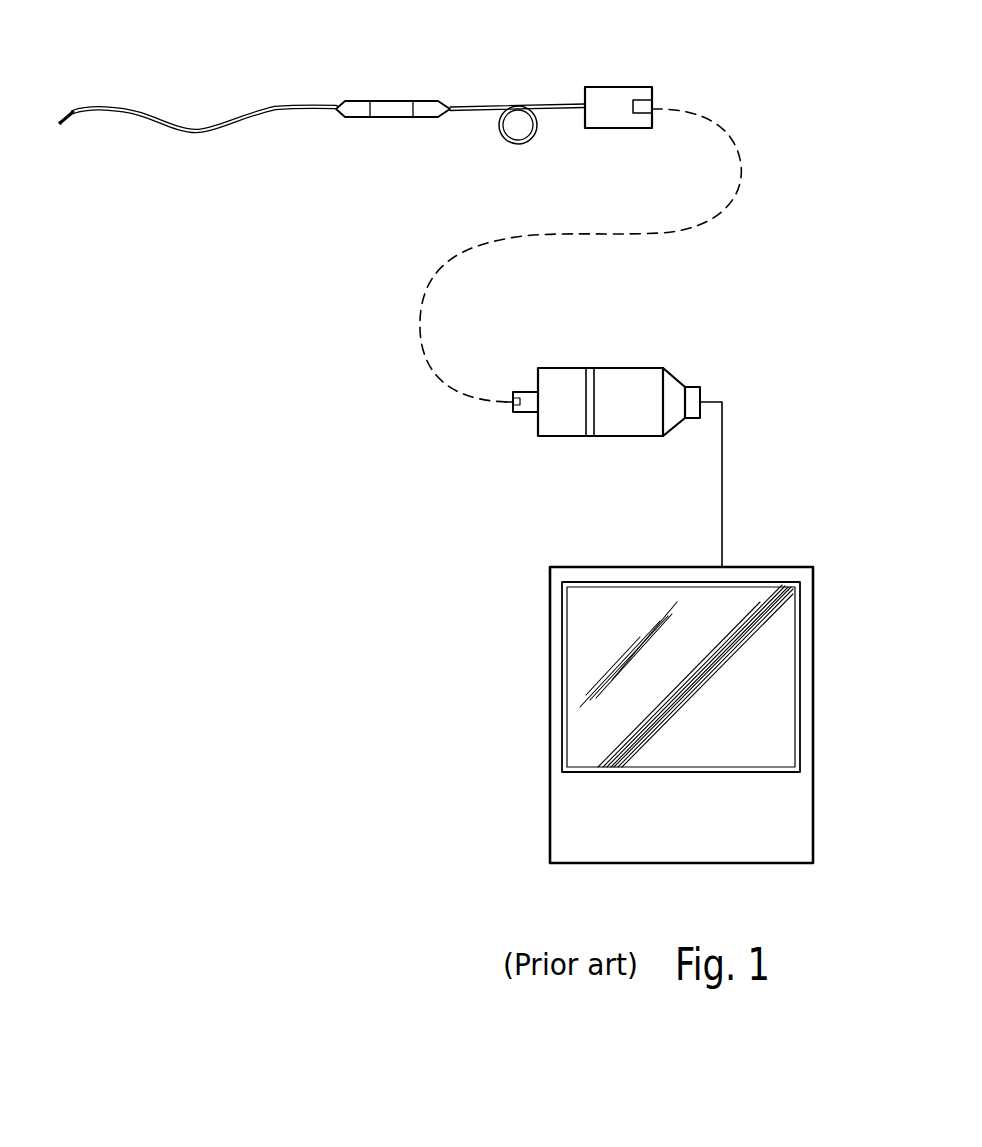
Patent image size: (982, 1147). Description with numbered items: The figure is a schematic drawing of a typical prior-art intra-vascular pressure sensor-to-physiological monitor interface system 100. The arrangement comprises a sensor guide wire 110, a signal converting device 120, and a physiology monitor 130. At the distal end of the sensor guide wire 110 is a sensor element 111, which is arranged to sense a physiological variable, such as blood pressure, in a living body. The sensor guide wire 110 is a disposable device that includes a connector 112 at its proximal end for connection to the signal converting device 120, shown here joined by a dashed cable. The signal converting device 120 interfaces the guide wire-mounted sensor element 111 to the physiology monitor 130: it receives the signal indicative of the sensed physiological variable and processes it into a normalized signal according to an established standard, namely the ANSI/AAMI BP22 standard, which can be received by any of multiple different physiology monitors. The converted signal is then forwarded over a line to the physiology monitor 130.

The intra-vascular pressure sensor-to-physiological monitor interface system 100 is at (794, 116).
The sensor guide wire 110 is at (283, 110).
The sensor element 111 is at (61, 121).
The connector 112 is at (620, 87).
The signal converting device 120 is at (645, 368).
The physiology monitor 130 is at (550, 649).